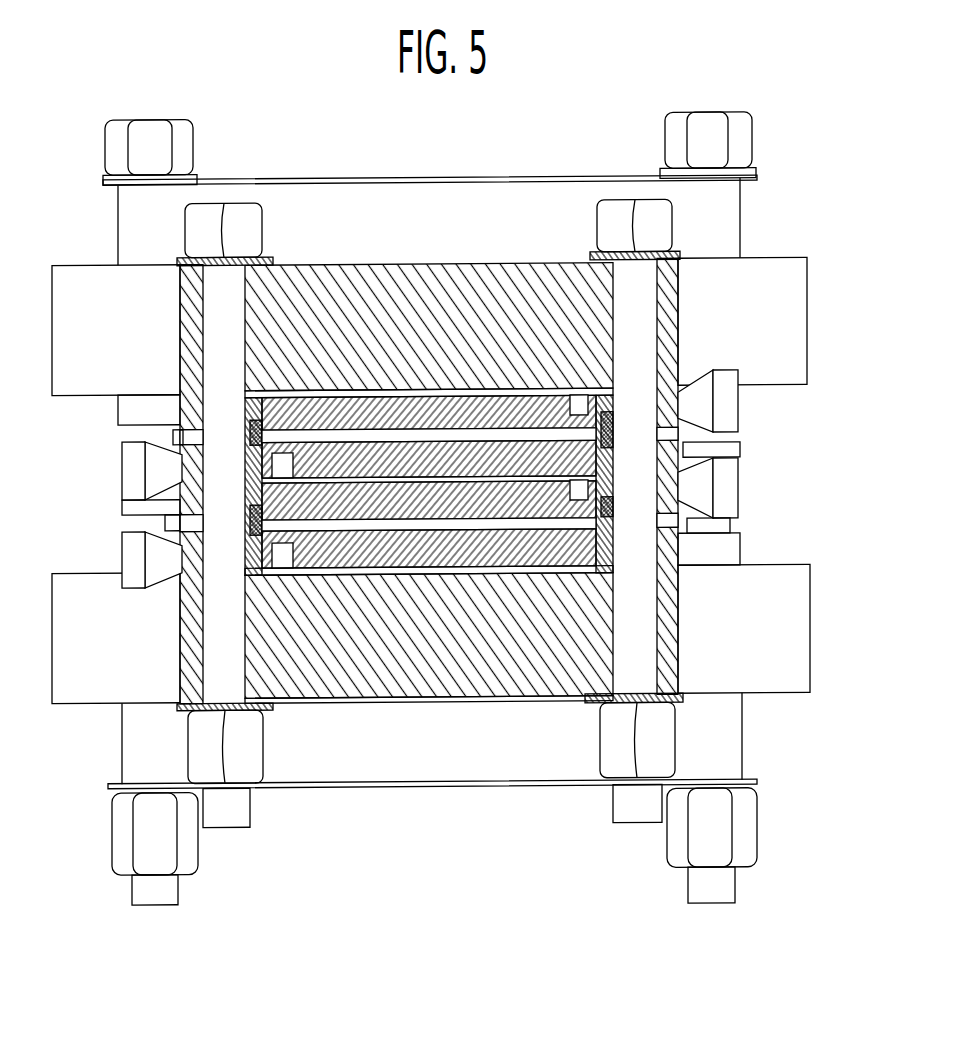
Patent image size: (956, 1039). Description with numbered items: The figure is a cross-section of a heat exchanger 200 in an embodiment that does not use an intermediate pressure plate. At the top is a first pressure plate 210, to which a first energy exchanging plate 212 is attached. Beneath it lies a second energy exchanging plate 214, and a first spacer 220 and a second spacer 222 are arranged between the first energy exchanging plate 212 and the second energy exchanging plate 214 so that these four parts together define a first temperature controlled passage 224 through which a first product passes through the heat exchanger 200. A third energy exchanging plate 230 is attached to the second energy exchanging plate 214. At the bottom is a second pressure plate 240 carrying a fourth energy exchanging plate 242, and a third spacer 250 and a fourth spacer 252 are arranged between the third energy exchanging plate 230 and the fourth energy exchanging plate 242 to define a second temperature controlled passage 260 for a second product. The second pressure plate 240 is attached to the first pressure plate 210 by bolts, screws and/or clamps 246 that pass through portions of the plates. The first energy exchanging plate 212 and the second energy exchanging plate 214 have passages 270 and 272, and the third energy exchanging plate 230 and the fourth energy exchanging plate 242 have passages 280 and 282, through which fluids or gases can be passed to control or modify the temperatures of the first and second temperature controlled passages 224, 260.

The heat exchanger 200 is at (433, 479).
The first pressure plate 210 is at (340, 286).
The first energy exchanging plate 212 is at (458, 410).
The second energy exchanging plate 214 is at (531, 402).
The first spacer 220 is at (270, 418).
The second spacer 222 is at (604, 389).
The first temperature controlled passage 224 is at (398, 427).
The third energy exchanging plate 230 is at (355, 494).
The second pressure plate 240 is at (506, 689).
The fourth energy exchanging plate 242 is at (448, 560).
The bolts, screws and/or clamps 246 is at (660, 224).
The third spacer 250 is at (276, 708).
The fourth spacer 252 is at (607, 562).
The second temperature controlled passage 260 is at (388, 524).
The passage 270 is at (720, 408).
The passage 272 is at (139, 461).
The passage 280 is at (719, 490).
The passage 282 is at (139, 543).